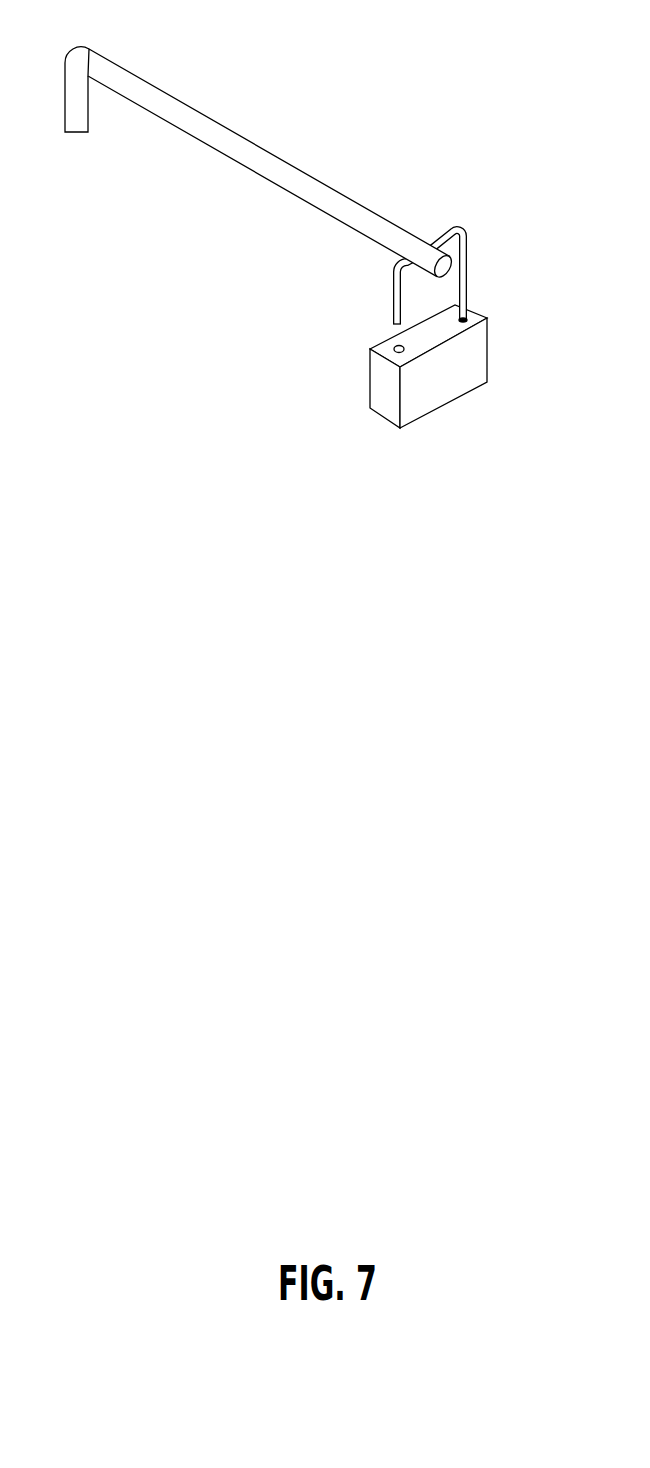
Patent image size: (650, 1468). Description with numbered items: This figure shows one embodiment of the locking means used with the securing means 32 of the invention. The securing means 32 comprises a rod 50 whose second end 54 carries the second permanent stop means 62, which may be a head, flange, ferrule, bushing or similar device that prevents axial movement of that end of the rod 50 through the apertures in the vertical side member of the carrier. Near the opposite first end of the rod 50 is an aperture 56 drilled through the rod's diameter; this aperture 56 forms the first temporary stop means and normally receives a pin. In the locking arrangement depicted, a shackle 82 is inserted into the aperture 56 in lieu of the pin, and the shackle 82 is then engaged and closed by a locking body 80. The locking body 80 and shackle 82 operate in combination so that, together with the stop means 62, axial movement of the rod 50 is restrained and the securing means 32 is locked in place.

The securing means 32 is at (241, 148).
The rod 50 is at (182, 102).
The second end 54 is at (241, 148).
The aperture 56 is at (379, 243).
The second permanent stop means 62 is at (80, 133).
The locking body 80 is at (478, 366).
The shackle 82 is at (468, 267).